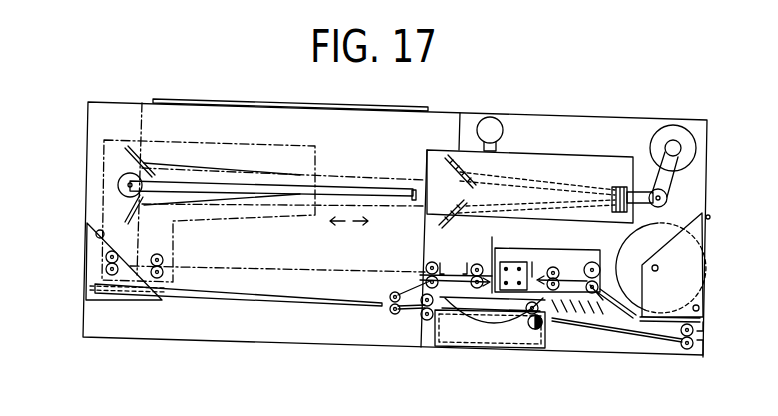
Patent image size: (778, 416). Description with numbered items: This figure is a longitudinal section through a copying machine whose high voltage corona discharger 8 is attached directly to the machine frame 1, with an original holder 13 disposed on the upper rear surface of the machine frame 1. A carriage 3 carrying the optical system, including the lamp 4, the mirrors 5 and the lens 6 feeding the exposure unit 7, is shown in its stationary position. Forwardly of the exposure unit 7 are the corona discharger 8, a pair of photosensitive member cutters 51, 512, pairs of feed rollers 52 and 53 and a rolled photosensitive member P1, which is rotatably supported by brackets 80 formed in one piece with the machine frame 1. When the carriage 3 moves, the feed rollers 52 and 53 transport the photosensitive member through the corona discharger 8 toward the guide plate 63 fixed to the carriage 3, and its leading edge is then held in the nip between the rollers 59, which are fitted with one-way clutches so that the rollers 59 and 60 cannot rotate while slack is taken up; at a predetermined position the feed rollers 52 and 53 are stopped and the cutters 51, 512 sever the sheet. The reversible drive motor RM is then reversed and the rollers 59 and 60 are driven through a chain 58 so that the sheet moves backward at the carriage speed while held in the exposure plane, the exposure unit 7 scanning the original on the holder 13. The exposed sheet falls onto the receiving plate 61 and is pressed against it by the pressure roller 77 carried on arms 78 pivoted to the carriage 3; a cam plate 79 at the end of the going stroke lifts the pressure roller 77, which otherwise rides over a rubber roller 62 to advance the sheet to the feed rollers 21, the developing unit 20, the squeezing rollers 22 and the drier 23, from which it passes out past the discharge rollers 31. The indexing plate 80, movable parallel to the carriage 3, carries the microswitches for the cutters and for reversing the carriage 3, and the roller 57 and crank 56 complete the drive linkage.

The machine frame 1 is at (88, 140).
The carriage 3 is at (568, 157).
The lamp 4 is at (495, 121).
The mirrors 5 is at (442, 213).
The lens 6 is at (615, 187).
The exposure unit 7 is at (453, 265).
The corona discharger 8 is at (512, 262).
The original holder 13 is at (228, 99).
The developing unit 20 is at (510, 342).
The feed rollers 21 is at (342, 190).
The squeezing rollers 22 is at (418, 196).
The drier 23 is at (592, 320).
The discharge rollers 31 is at (687, 350).
The photosensitive member cutter 51 is at (535, 263).
The photosensitive member cutter 512 is at (548, 263).
The feed rollers 52 is at (597, 287).
The feed rollers 53 is at (553, 316).
The crank 56 is at (670, 197).
The roller 57 is at (125, 172).
The chain 58 is at (373, 177).
The rollers 59 is at (477, 264).
The rollers 60 is at (430, 280).
The receiving plate 61 is at (247, 302).
The rubber roller 62 is at (392, 312).
The guide plate 63 is at (482, 303).
The pressure roller 77 is at (391, 304).
The arms 78 is at (410, 285).
The cam plate 79 is at (110, 300).
The brackets / indexing plate 80 is at (703, 242).
The reversible drive motor RM is at (672, 132).
The rolled photosensitive member P1 is at (669, 271).